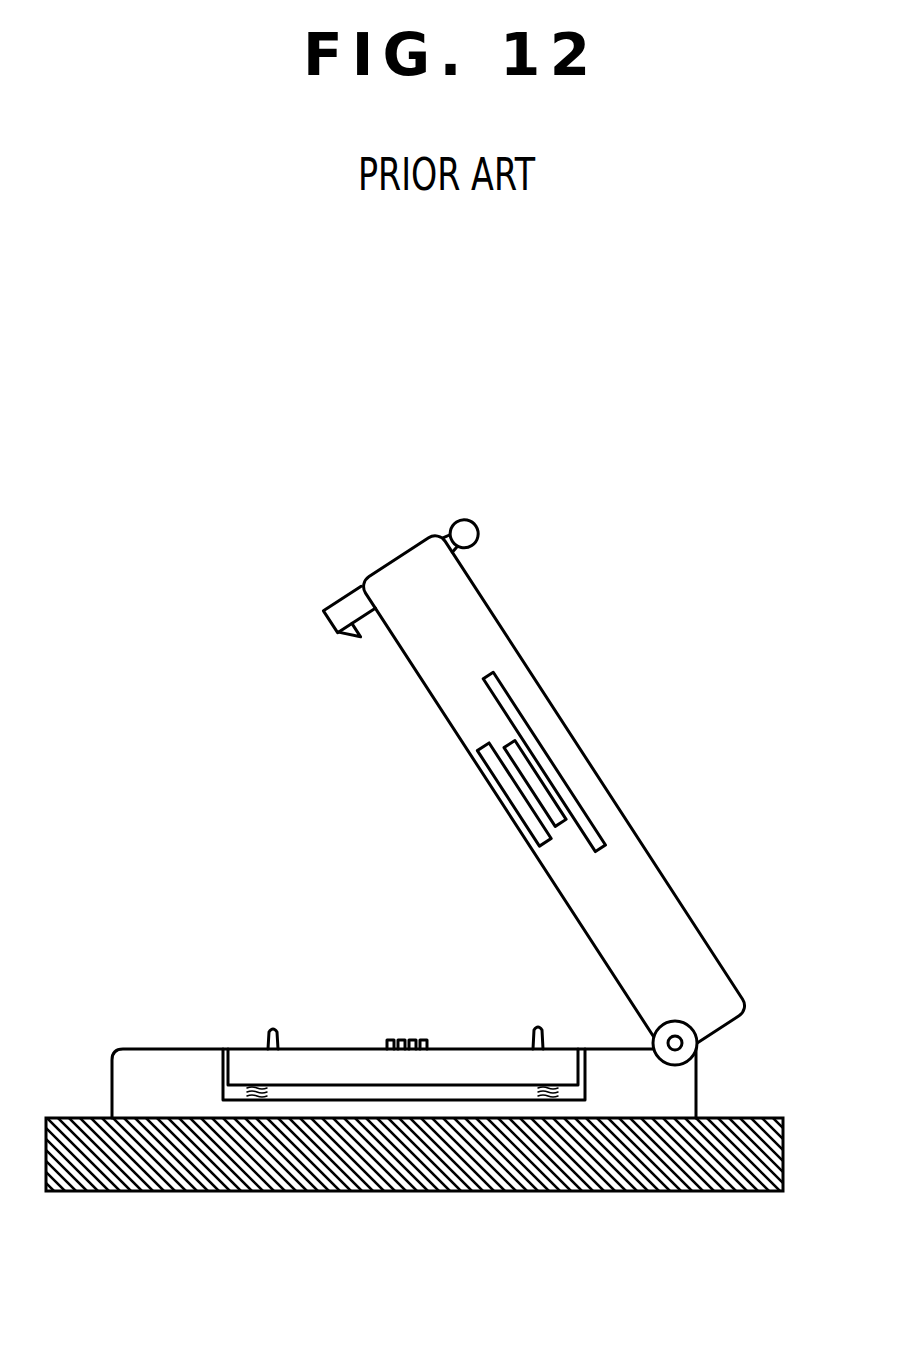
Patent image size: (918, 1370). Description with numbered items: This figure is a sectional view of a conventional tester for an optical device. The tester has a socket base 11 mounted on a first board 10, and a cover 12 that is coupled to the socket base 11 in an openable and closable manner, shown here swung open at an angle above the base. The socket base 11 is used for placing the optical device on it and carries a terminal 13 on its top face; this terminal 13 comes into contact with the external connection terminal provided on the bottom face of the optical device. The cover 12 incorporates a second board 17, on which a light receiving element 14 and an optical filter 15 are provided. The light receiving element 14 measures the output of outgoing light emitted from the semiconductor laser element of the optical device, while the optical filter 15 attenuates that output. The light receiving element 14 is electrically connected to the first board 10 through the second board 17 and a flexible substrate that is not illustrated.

The first board 10 is at (167, 1191).
The socket base 11 is at (633, 1083).
The cover 12 is at (673, 920).
The terminal 13 is at (400, 1038).
The light receiving element 14 is at (518, 758).
The optical filter 15 is at (517, 800).
The second board 17 is at (528, 747).